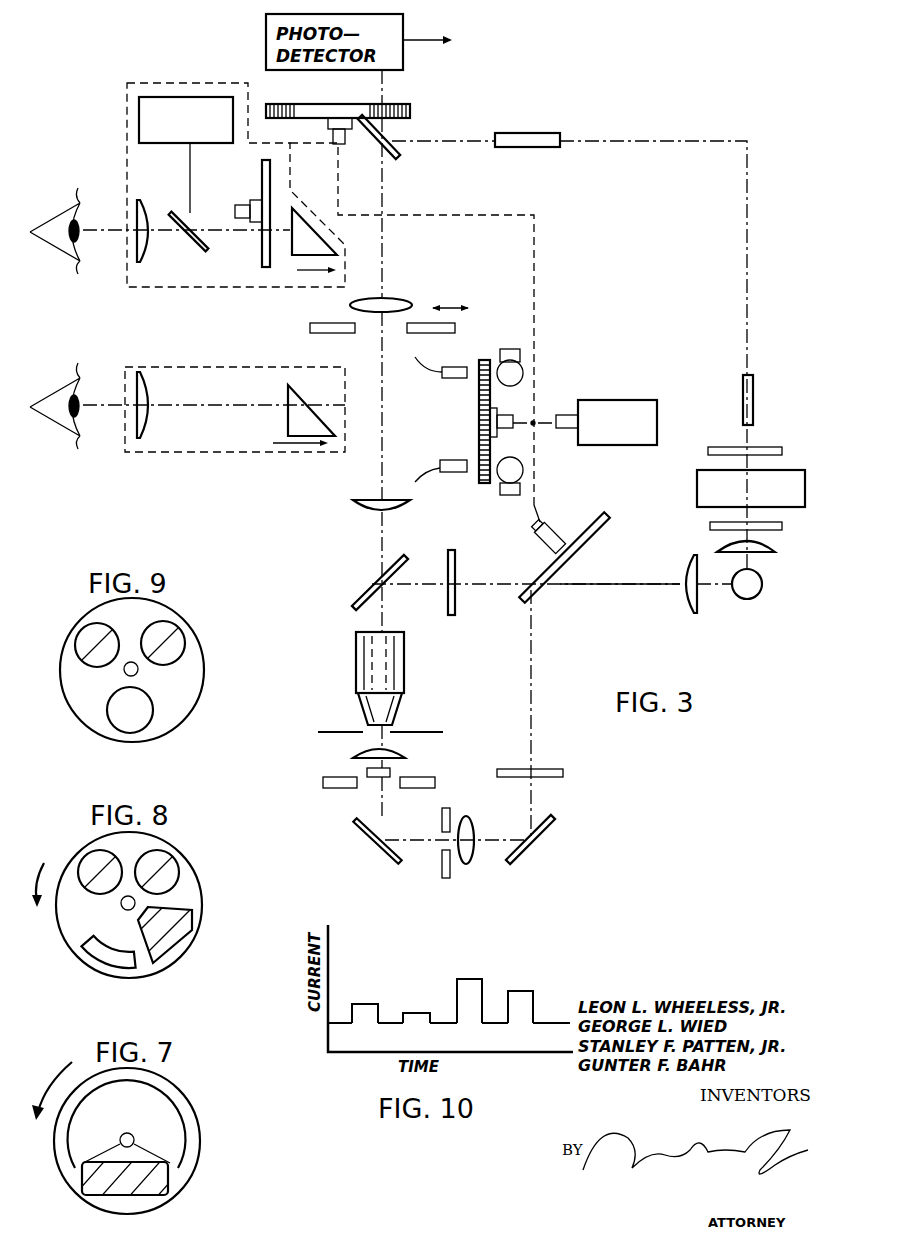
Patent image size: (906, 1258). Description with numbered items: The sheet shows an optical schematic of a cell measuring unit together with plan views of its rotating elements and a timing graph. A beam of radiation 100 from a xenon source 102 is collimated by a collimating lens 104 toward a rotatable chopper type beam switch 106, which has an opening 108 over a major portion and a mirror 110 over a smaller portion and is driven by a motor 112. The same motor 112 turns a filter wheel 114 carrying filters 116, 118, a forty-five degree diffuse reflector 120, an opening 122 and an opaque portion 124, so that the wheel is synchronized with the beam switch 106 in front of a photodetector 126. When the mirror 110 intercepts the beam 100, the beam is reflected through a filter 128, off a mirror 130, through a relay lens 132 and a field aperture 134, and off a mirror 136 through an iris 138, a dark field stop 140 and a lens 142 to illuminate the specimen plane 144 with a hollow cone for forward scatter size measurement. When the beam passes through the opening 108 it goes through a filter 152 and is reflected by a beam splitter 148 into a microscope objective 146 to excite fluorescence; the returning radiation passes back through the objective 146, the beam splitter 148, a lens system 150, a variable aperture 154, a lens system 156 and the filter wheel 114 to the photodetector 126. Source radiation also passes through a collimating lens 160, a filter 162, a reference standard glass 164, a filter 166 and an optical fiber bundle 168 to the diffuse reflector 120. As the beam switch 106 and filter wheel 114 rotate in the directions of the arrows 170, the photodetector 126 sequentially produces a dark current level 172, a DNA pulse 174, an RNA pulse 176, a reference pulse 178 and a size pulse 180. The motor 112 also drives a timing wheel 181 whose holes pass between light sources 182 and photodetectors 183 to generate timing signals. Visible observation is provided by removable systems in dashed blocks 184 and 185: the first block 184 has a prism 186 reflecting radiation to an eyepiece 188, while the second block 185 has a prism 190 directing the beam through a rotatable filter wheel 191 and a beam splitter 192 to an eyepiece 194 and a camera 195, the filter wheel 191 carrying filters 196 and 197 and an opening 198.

In FIG. 3, the beam of radiation 100 is at (565, 585).
In FIG. 3, the xenon source 102 is at (755, 596).
In FIG. 3, the collimating lens 104 is at (681, 572).
In FIG. 3, the rotatable chopper type beam switch 106 is at (543, 574).
In FIG. 7, the rotatable chopper type beam switch 106 is at (258, 1138).
In FIG. 7, the opening 108 is at (165, 1103).
In FIG. 7, the mirror 110 is at (162, 1183).
In FIG. 3, the motor 112 is at (612, 400).
In FIG. 3, the filter wheel 114 is at (411, 108).
In FIG. 8, the filter wheel 114 is at (250, 882).
In FIG. 8, the filter 116 is at (100, 862).
In FIG. 8, the filter 118 is at (172, 862).
In FIG. 3, the 45° diffuse reflector 120 is at (400, 153).
In FIG. 8, the 45° diffuse reflector 120 is at (168, 923).
In FIG. 8, the opening 122 is at (117, 957).
In FIG. 8, the opaque portion 124 is at (78, 923).
In FIG. 3, the photodetector 126 is at (405, 27).
In FIG. 3, the filter 128 is at (555, 768).
In FIG. 3, the mirror 130 is at (550, 823).
In FIG. 3, the relay lens 132 is at (473, 840).
In FIG. 3, the field aperture 134 is at (453, 793).
In FIG. 3, the mirror 136 is at (398, 863).
In FIG. 3, the iris 138 is at (345, 790).
In FIG. 3, the dark field stop 140 is at (367, 772).
In FIG. 3, the lens 142 is at (407, 750).
In FIG. 3, the specimen plane 144 is at (422, 732).
In FIG. 3, the microscope objective 146 is at (405, 662).
In FIG. 3, the beam splitter 148 is at (378, 583).
In FIG. 3, the lens system 150 is at (352, 502).
In FIG. 3, the filter 152 is at (456, 600).
In FIG. 3, the variable aperture 154 is at (455, 330).
In FIG. 3, the lens system 156 is at (395, 297).
In FIG. 3, the collimating lens 160 is at (775, 548).
In FIG. 3, the filter 162 is at (710, 525).
In FIG. 3, the reference standard glass 164 is at (697, 483).
In FIG. 3, the filter 166 is at (770, 445).
In FIG. 3, the optical fiber bundle 168 is at (515, 132).
In FIG. 8, the arrows 170 is at (44, 900).
In FIG. 7, the arrows 170 is at (50, 1085).
In FIG. 10, the dark current level 172 is at (338, 1020).
In FIG. 10, the DNA pulse 174 is at (370, 1003).
In FIG. 10, the RNA pulse 176 is at (418, 1011).
In FIG. 10, the reference pulse 178 is at (470, 978).
In FIG. 10, the size pulse 180 is at (517, 990).
In FIG. 3, the timing wheel 181 is at (478, 478).
In FIG. 3, the light sources 182 is at (522, 366).
In FIG. 3, the photodetectors 183 is at (457, 380).
In FIG. 3, the dashed block 184 is at (170, 452).
In FIG. 3, the dashed block 185 is at (125, 276).
In FIG. 3, the prism 186 is at (300, 425).
In FIG. 3, the eyepiece 188 is at (150, 385).
In FIG. 3, the prism 190 is at (323, 238).
In FIG. 3, the rotatable filter wheel 191 is at (262, 255).
In FIG. 9, the rotatable filter wheel 191 is at (80, 722).
In FIG. 3, the beam splitter 192 is at (188, 200).
In FIG. 3, the eyepiece 194 is at (147, 200).
In FIG. 3, the camera 195 is at (139, 120).
In FIG. 9, the filter 196 is at (92, 635).
In FIG. 9, the filter 197 is at (182, 644).
In FIG. 9, the opening 198 is at (143, 715).